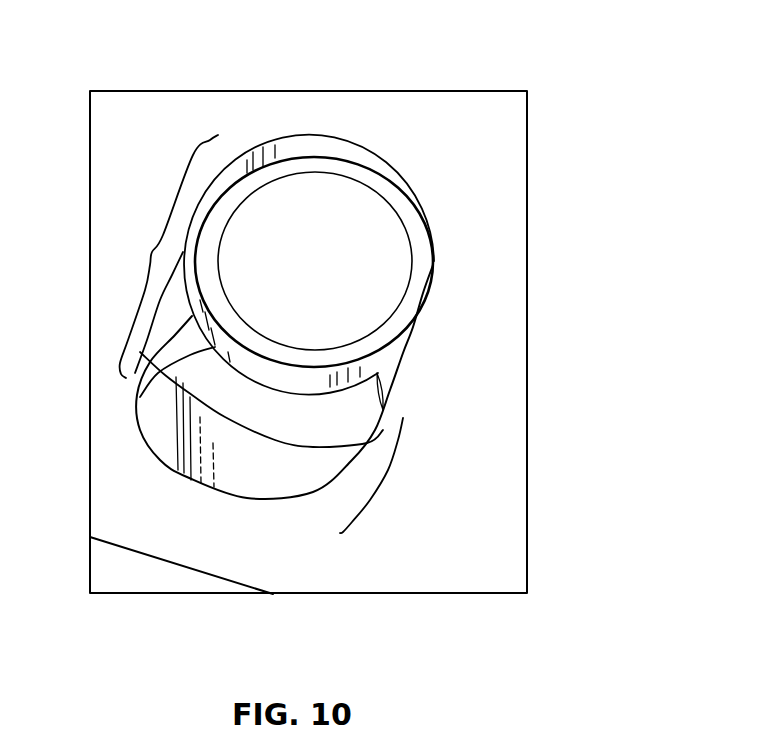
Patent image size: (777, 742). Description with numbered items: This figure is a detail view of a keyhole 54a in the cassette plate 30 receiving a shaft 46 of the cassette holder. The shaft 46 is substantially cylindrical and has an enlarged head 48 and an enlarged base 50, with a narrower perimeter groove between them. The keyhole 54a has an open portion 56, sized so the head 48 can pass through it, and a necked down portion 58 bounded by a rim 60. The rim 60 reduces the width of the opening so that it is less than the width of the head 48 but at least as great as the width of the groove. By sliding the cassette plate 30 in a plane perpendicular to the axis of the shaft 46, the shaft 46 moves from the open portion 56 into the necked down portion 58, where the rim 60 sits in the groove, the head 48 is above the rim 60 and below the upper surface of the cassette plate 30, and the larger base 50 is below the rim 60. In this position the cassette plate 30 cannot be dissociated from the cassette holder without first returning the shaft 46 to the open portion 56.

The cassette plate 30 is at (497, 626).
The shaft 46 is at (300, 150).
The head 48 is at (413, 264).
The base 50 is at (297, 478).
The keyhole 54a is at (410, 369).
The open portion 56 is at (387, 475).
The necked down portion 58 is at (148, 247).
The rim 60 is at (193, 358).